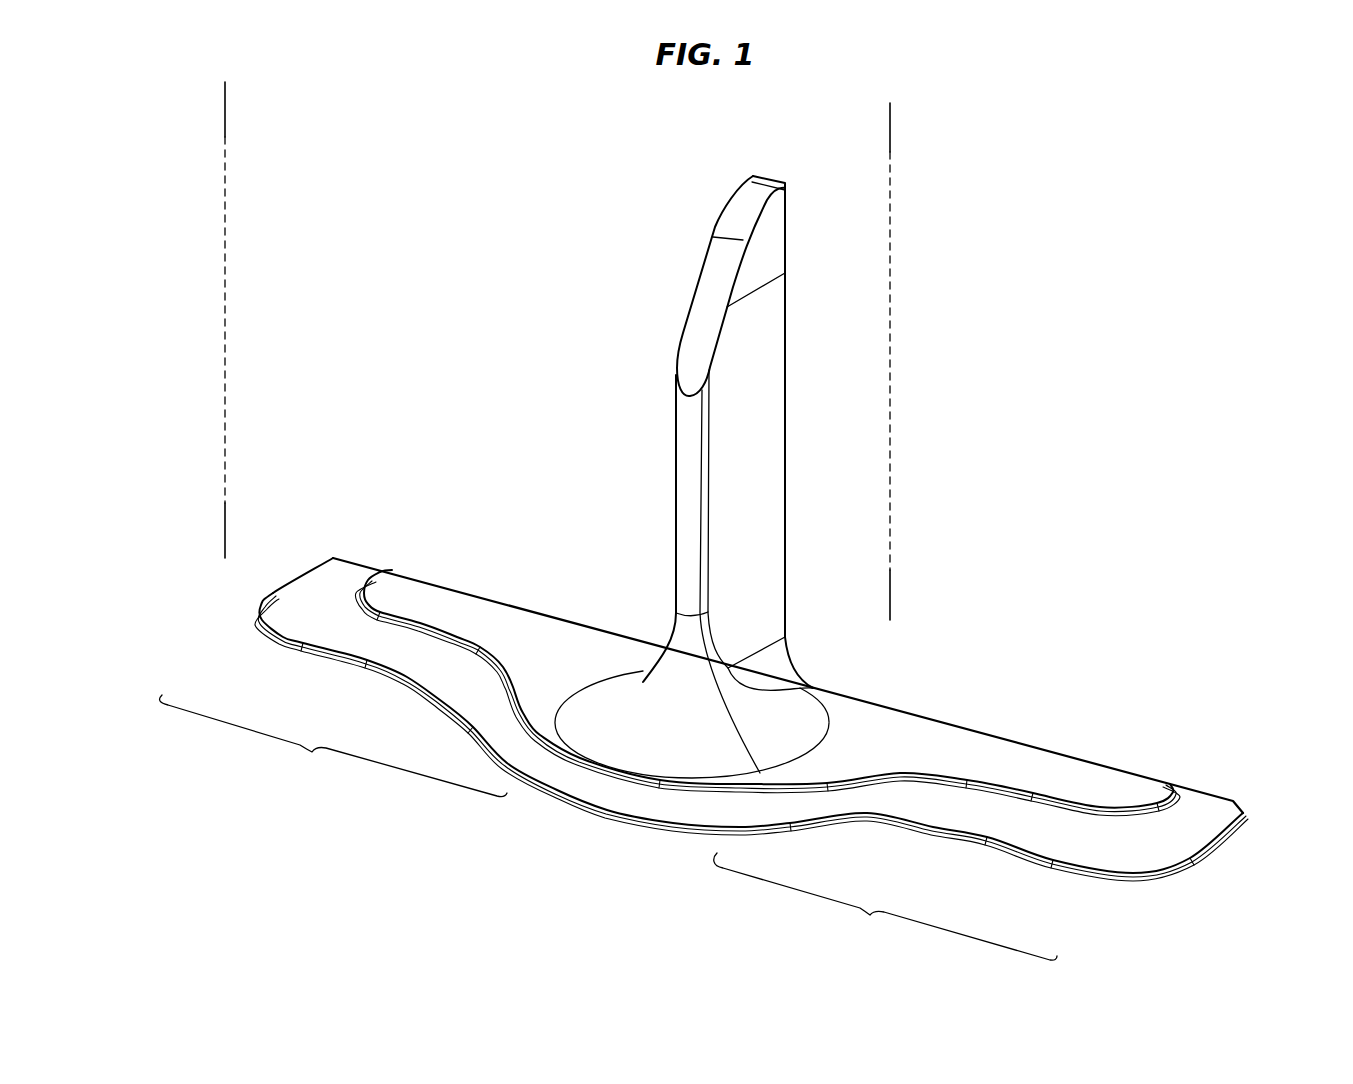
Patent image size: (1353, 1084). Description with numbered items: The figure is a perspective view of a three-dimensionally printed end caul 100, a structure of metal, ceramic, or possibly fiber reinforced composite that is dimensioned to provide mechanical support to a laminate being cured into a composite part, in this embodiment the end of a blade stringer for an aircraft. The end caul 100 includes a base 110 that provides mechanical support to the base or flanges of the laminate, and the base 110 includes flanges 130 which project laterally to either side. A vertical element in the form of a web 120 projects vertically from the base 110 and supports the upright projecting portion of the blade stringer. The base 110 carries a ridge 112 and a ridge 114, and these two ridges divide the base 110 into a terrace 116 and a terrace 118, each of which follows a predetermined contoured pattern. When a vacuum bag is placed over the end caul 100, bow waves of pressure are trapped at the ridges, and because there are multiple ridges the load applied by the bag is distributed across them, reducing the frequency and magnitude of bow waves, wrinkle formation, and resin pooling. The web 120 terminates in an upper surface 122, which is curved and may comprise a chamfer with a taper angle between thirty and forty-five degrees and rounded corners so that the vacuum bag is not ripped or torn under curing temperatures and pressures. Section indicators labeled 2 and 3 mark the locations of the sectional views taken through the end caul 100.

The end caul 100 is at (1020, 453).
The base 110 is at (751, 696).
The ridge 112 is at (494, 663).
The ridge 114 is at (346, 665).
The terrace 116 is at (463, 598).
The terrace 118 is at (343, 578).
The web 120 is at (735, 474).
The upper surface 122 is at (687, 326).
The flanges 130 is at (608, 827).
The section line 2- 2 is at (265, 104).
The section line 3- 3 is at (858, 136).